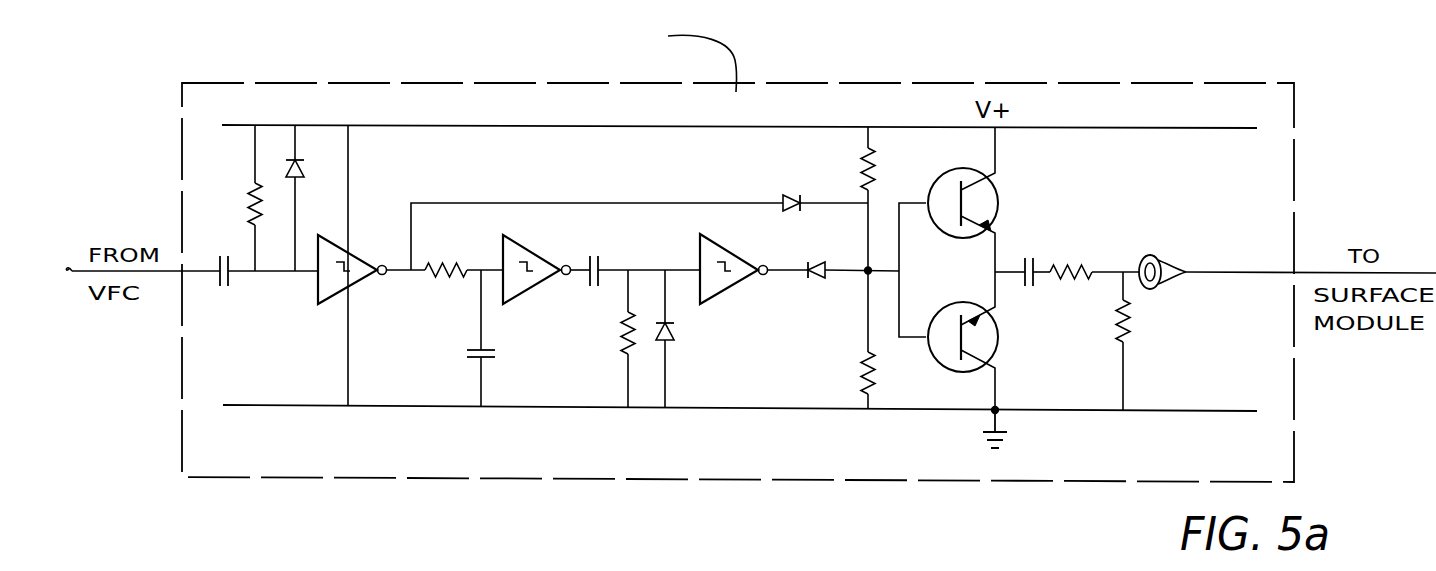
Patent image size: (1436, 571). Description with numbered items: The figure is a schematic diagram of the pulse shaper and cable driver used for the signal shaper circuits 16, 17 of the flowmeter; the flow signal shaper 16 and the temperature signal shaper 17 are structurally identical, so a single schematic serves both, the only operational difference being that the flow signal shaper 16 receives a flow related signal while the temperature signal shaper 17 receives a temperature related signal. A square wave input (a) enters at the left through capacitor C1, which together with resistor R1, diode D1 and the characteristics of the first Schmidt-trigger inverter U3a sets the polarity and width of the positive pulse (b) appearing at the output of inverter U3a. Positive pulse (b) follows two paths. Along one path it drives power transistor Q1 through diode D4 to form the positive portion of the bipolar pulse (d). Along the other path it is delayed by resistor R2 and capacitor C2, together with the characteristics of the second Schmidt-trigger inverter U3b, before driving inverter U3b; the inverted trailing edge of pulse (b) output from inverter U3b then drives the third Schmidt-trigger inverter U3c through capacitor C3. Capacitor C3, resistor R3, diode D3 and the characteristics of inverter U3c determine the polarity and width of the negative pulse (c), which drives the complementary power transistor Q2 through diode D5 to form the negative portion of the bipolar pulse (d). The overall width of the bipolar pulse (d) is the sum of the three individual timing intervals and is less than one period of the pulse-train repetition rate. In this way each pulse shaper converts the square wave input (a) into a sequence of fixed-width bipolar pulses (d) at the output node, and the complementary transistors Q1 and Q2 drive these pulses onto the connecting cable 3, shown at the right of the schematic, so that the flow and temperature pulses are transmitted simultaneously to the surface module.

The flow signal shaper 16 is at (838, 100).
The temperature signal shaper 17 is at (738, 253).
The resistor R1 is at (252, 184).
The diode D1 is at (300, 165).
The capacitor C1 is at (232, 278).
The Schmidt-trigger inverter U3a is at (316, 288).
The resistor R2 is at (447, 265).
The capacitor C2 is at (476, 358).
The Schmidt-trigger inverter U3b is at (540, 298).
The capacitor C3 is at (603, 266).
The resistor R3 is at (625, 335).
The diode D3 is at (672, 332).
The Schmidt-trigger inverter U3c is at (742, 290).
The diode D4 is at (812, 170).
The diode D5 is at (827, 278).
The power transistor Q1 is at (998, 198).
The power transistor Q2 is at (997, 338).
The square wave input a is at (192, 270).
The positive pulse b is at (660, 203).
The negative pulse c is at (787, 268).
The bipolar pulse d is at (1125, 250).
The connecting cable 3 is at (1173, 262).